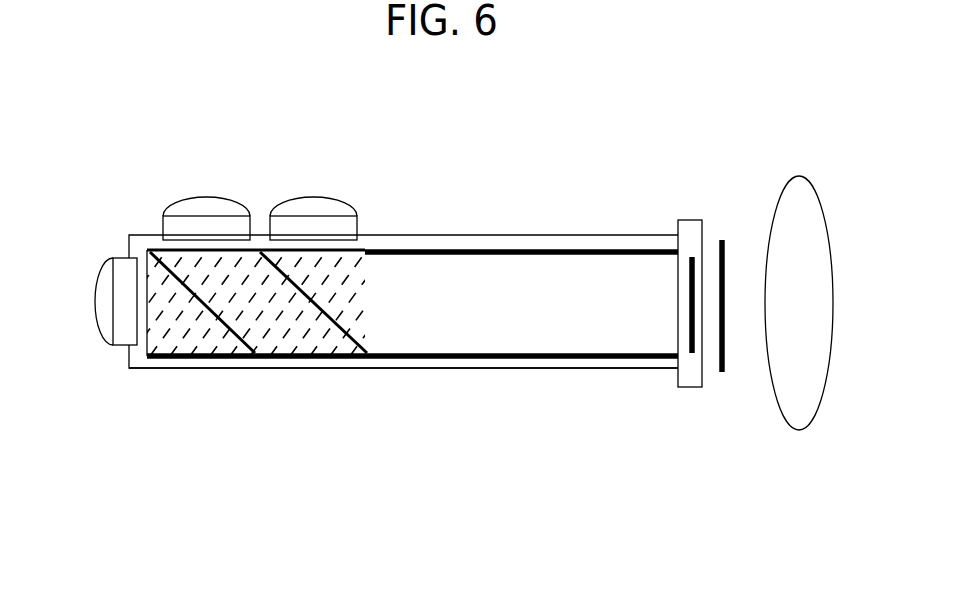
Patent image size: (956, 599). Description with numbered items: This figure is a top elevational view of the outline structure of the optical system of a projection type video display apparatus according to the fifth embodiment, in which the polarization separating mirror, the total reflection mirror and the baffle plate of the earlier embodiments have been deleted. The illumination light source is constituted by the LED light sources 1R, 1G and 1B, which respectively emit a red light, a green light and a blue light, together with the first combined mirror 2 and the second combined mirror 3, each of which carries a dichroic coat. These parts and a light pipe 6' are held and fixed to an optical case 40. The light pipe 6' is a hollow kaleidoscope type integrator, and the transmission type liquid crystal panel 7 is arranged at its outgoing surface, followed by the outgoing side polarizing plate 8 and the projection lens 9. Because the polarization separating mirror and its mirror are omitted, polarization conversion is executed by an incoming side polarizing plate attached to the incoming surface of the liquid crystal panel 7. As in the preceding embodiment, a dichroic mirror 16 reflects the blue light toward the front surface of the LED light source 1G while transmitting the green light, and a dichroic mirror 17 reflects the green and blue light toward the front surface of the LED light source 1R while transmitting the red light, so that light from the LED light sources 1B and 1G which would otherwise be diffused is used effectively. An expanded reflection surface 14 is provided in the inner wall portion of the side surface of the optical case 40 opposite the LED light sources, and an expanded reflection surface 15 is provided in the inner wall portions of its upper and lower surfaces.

The LED light source 1B is at (108, 323).
The LED light source 1G is at (195, 208).
The LED light source 1R is at (308, 210).
The first combined mirror 2 is at (205, 350).
The second combined mirror 3 is at (297, 355).
The light pipe 6' is at (403, 404).
The transmission type liquid crystal panel 7 is at (688, 387).
The outgoing side polarizing plate 8 is at (722, 373).
The projection lens 9 is at (805, 408).
The expanded reflection surface 14 is at (333, 355).
The expanded reflection surface 15 is at (333, 300).
The dichroic mirror 16 is at (177, 250).
The dichroic mirror 17 is at (290, 250).
The optical case 40 is at (497, 238).